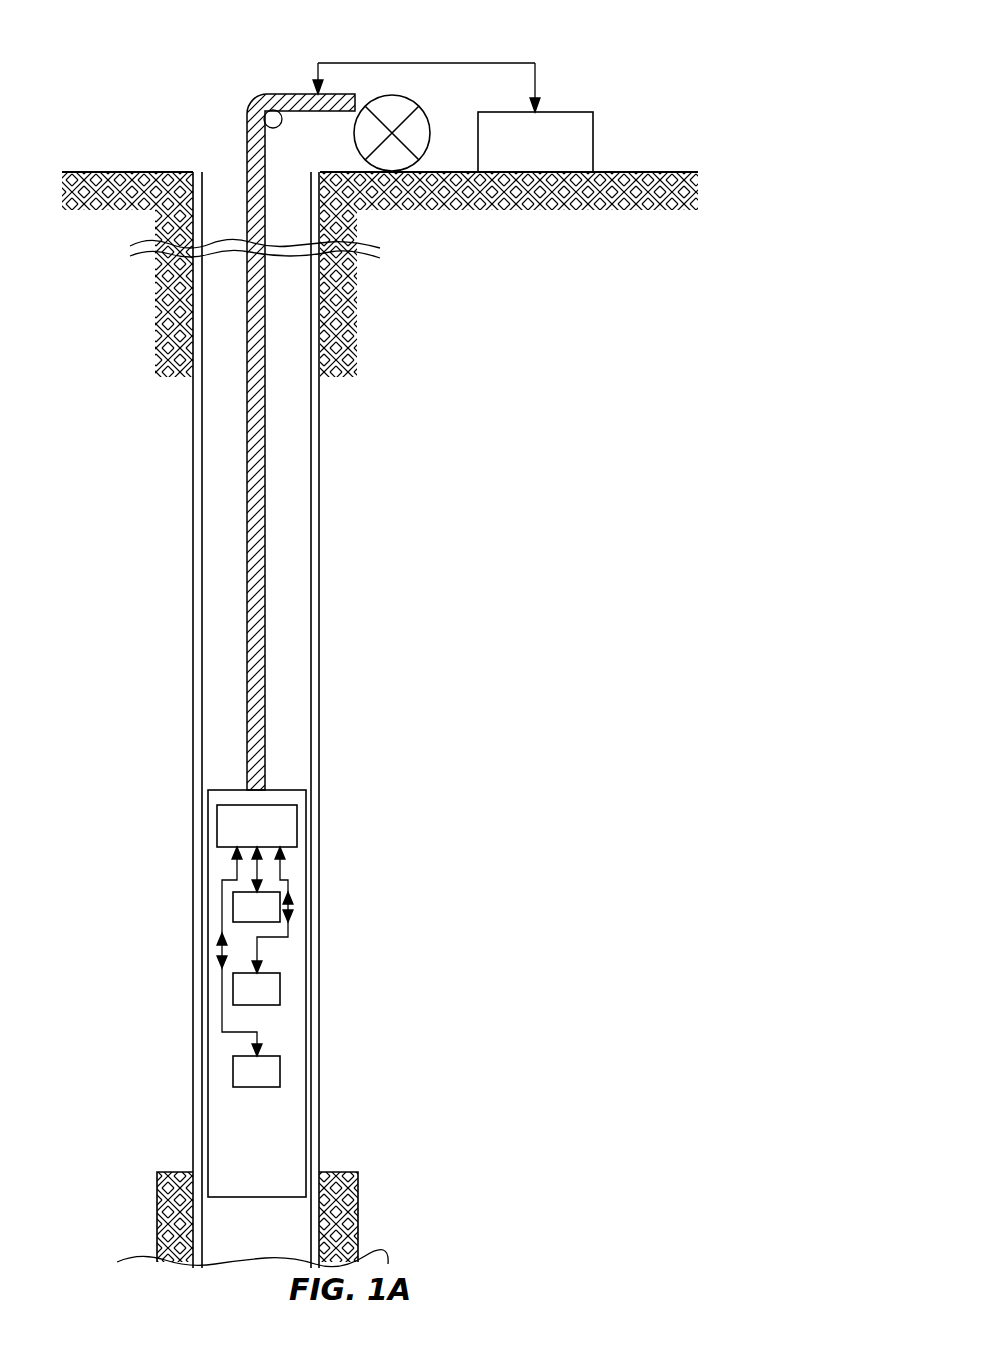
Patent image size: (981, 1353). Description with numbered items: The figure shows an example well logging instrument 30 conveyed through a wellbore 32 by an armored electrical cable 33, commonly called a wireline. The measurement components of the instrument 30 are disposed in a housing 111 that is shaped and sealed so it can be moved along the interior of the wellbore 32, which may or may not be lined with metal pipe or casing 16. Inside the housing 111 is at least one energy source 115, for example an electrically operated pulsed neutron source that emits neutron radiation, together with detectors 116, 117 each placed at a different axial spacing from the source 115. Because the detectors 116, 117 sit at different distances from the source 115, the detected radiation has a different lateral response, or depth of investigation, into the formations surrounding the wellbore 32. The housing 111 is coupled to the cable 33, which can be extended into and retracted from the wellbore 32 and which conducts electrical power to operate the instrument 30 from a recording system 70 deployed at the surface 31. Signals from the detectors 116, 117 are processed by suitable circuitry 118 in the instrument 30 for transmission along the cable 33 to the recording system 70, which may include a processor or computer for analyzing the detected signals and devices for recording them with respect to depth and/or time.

The casing 16 is at (193, 655).
The well logging instrument 30 is at (233, 790).
The surface 31 is at (115, 172).
The wellbore 32 is at (228, 193).
The armored electrical cable 33 is at (260, 108).
The recording system 70 is at (577, 127).
The housing 111 is at (193, 1122).
The energy source 115 is at (273, 1070).
The detector 116 is at (273, 987).
The detector 117 is at (242, 912).
The circuitry 118 is at (273, 830).